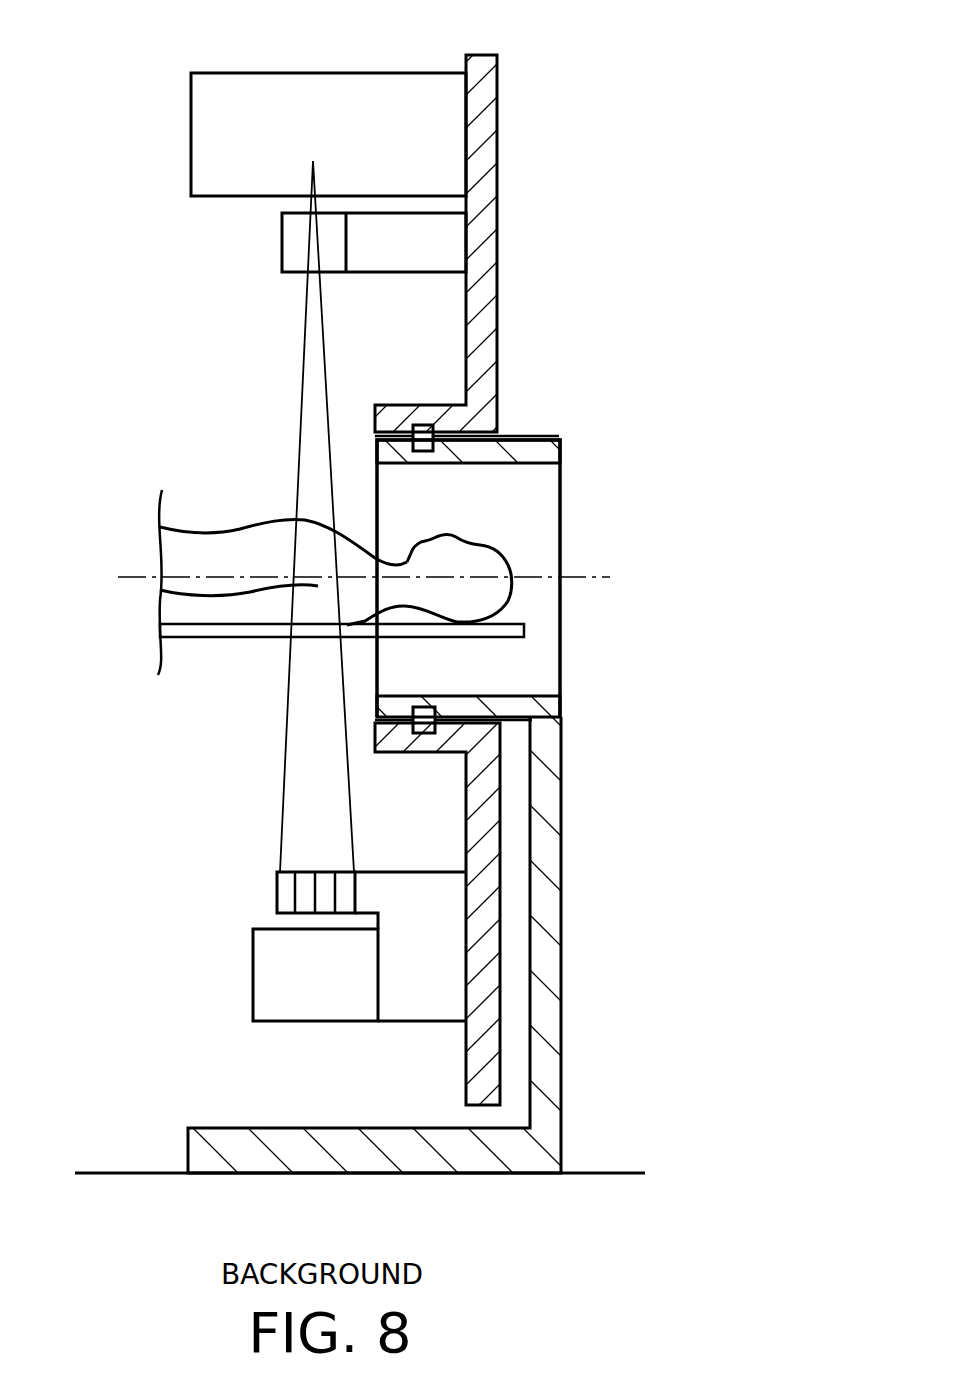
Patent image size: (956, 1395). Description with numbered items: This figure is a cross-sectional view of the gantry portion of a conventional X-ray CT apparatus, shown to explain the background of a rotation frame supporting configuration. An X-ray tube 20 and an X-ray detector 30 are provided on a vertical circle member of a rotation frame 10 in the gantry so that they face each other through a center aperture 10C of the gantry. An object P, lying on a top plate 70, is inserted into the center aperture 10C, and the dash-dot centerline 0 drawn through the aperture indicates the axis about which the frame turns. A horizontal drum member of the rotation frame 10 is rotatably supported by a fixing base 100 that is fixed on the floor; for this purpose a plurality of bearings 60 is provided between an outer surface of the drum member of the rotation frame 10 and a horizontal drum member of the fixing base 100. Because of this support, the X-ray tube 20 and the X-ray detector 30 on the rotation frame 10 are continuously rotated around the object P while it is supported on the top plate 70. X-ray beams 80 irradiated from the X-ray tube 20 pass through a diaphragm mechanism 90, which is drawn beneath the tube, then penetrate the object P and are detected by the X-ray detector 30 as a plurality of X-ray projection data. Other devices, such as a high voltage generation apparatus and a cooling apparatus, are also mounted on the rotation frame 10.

The X-ray tube 20 is at (278, 88).
The rotation frame 10 is at (484, 103).
The diaphragm mechanism 90 is at (292, 250).
The center aperture 10C is at (535, 500).
The bearings 60 is at (423, 430).
The rotation axis 0 is at (134, 577).
The object P is at (500, 563).
The top plate 70 is at (497, 636).
The radiation beam 80 is at (283, 757).
The X-ray detector 30 is at (276, 898).
The fixing base 100 is at (552, 1004).